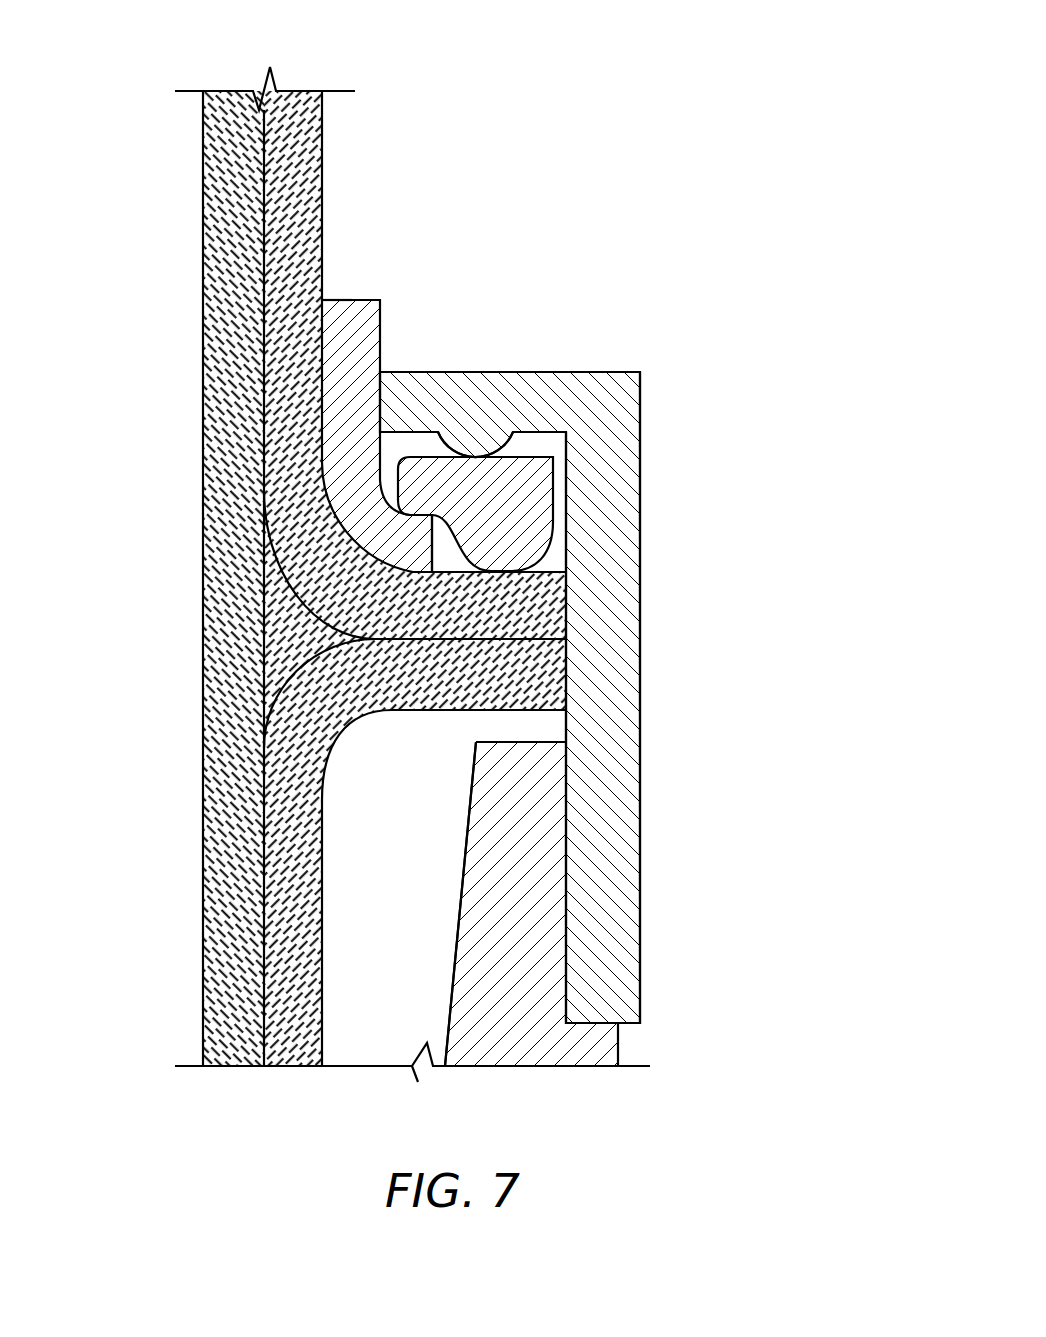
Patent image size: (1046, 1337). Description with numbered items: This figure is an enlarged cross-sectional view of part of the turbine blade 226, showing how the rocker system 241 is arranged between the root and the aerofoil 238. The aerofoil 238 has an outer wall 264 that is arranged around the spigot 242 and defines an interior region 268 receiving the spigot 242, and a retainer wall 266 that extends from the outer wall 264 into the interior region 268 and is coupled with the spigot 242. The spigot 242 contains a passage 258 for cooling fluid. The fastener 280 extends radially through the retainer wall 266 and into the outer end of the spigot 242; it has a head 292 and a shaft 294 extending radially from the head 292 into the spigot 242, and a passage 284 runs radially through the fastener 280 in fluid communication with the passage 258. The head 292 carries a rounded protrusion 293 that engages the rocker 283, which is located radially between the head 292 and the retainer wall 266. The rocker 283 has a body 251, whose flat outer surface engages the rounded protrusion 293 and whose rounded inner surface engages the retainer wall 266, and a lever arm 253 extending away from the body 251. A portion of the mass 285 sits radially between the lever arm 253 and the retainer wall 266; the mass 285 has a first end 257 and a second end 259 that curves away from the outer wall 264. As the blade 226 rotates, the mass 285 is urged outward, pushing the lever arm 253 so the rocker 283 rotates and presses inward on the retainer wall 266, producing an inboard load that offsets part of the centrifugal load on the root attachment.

The turbine blade 226 is at (777, 64).
The aerofoil 238 is at (200, 528).
The outer wall 264 is at (200, 345).
The mass 285 is at (333, 298).
The first end 257 is at (380, 298).
The rocker system 241 is at (568, 281).
The head 292 is at (483, 370).
The fastener 280 is at (554, 370).
The body 251 is at (549, 452).
The passage 284 is at (654, 392).
The rounded protrusion 293 is at (466, 447).
The lever arm 253 is at (384, 478).
The rocker 283 is at (527, 487).
The shaft 294 is at (643, 712).
The second end 259 is at (421, 545).
The retainer wall 266 is at (457, 713).
The interior region 268 is at (350, 980).
The spigot 242 is at (444, 1017).
The passage 258 is at (642, 1050).